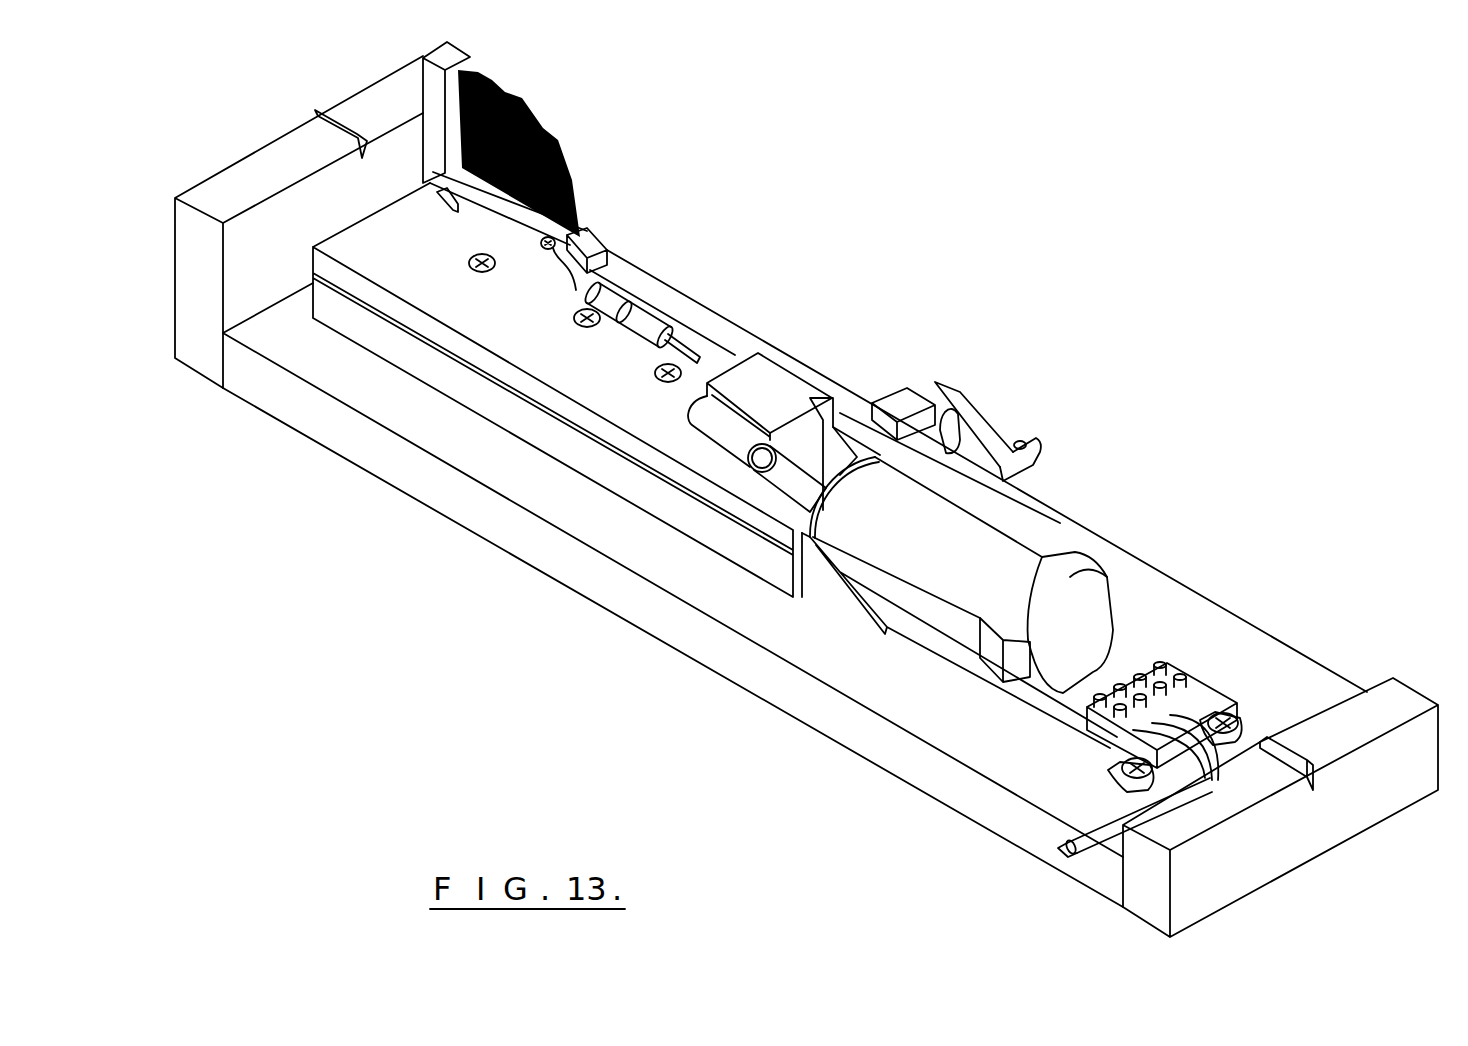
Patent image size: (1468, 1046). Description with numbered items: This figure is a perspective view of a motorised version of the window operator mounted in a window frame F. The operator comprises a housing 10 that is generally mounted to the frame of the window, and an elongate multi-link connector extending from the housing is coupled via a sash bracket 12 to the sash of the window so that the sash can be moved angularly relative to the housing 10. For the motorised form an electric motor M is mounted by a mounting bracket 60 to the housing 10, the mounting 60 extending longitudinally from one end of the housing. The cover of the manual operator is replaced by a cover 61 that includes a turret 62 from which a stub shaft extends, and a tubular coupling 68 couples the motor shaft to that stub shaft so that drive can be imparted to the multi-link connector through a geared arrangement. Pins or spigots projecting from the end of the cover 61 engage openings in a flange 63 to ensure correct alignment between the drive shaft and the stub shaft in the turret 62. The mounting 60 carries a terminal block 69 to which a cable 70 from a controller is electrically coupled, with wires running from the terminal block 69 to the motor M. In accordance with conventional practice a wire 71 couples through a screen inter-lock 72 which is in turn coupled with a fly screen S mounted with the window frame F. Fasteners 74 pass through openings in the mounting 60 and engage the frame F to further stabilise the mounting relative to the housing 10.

The housing 10 is at (502, 415).
The window frame F is at (1172, 578).
The fly screen S is at (562, 140).
The cover 61 is at (557, 390).
The screen inter-lock 72 is at (642, 327).
The wire 71 is at (685, 347).
The turret 62 is at (775, 378).
The flange 63 is at (852, 455).
The coupling 68 is at (785, 465).
The mounting bracket 60 is at (833, 590).
The sash bracket 12 is at (982, 400).
The electric motor M is at (1008, 545).
The terminal block 69 is at (1182, 672).
The fasteners 74 is at (1233, 718).
The cable 70 is at (1060, 857).